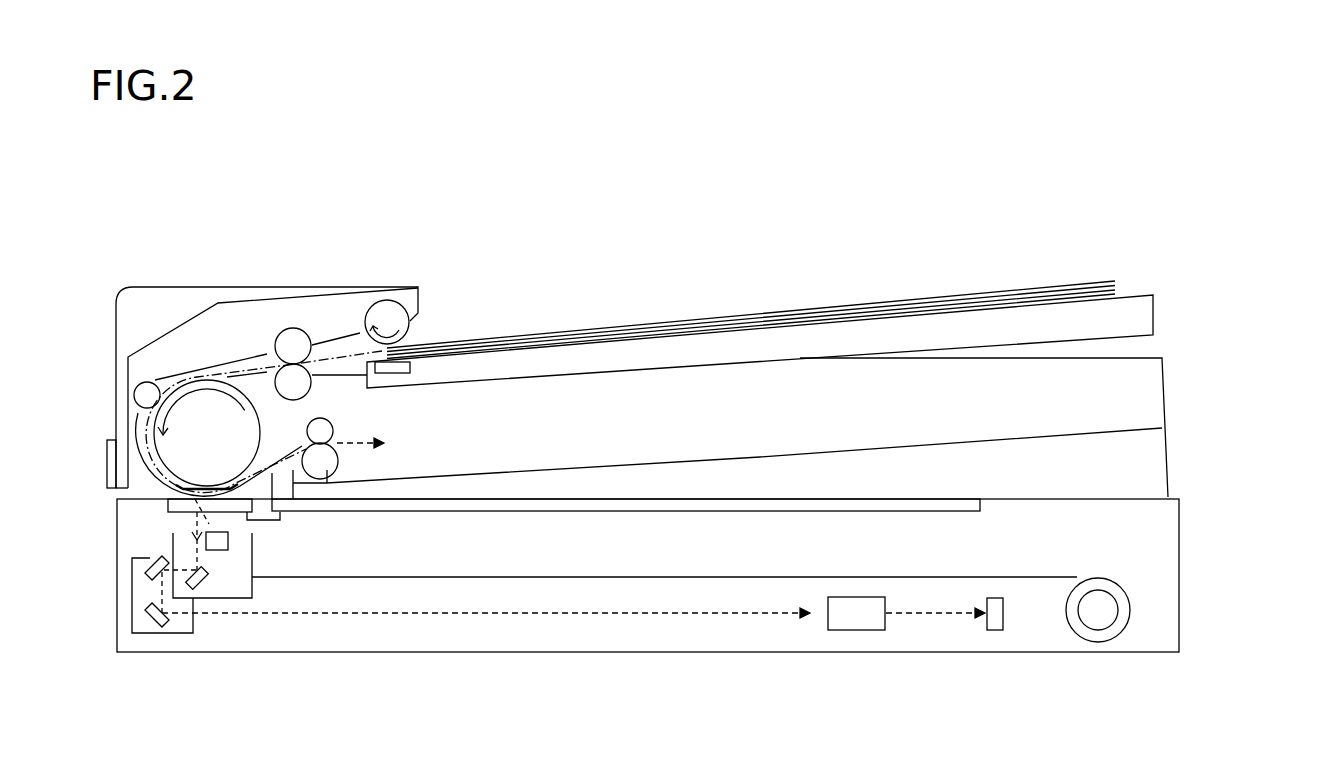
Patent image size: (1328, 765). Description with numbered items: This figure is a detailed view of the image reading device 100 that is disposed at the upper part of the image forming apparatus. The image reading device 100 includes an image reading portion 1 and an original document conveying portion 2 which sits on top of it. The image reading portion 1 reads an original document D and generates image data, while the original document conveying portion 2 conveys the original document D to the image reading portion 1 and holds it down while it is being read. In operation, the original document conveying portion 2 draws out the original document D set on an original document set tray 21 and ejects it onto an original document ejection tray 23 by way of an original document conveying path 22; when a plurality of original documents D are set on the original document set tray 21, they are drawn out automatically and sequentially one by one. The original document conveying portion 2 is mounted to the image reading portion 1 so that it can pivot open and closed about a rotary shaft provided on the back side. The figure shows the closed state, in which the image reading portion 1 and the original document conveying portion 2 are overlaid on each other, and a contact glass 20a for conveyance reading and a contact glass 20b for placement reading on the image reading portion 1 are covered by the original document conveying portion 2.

The image reading device 100 is at (1210, 375).
The image reading portion 1 is at (1180, 597).
The original document conveying portion 2 is at (1165, 426).
The original document set tray 21 is at (1135, 307).
The original document conveying path 22 is at (165, 375).
The original document ejection tray 23 is at (608, 470).
The contact glass for conveyance reading 20a is at (232, 508).
The contact glass for placement reading 20b is at (715, 508).
The original document D is at (827, 305).